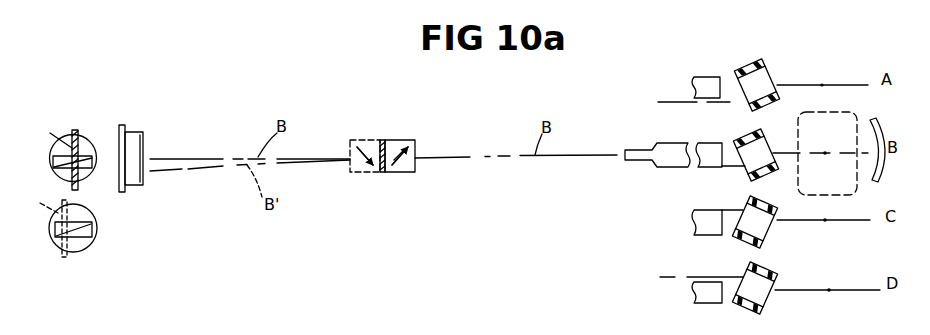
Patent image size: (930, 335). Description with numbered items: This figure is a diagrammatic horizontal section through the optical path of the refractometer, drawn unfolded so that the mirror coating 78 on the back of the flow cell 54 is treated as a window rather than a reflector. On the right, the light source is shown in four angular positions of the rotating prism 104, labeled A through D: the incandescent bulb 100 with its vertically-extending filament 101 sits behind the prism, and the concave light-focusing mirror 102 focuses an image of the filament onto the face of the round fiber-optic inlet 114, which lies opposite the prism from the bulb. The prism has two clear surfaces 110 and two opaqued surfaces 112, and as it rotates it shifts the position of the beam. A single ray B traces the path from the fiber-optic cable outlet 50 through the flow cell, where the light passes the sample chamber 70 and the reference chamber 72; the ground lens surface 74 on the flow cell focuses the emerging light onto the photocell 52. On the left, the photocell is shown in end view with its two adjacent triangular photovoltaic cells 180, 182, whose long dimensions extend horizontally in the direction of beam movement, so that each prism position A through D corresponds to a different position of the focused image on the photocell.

The fiber-optic cable outlet 50 is at (638, 166).
The photocell 52 is at (84, 129).
The flow cell 54 is at (366, 179).
The sample chamber 70 is at (408, 153).
The reference chamber 72 is at (400, 146).
The lens surface 74 is at (350, 168).
The mirror coating 78 is at (382, 140).
The incandescent bulb 100 is at (842, 133).
The filament 101 is at (822, 85).
The light-focusing mirror 102 is at (870, 120).
The rotating prism 104 is at (741, 58).
The clear surfaces 110 is at (736, 80).
The opaqued surfaces 112 is at (750, 63).
The fiber-optic inlet 114 is at (706, 232).
The triangular photovoltaic cell 180 is at (79, 237).
The triangular photovoltaic cell 182 is at (89, 228).